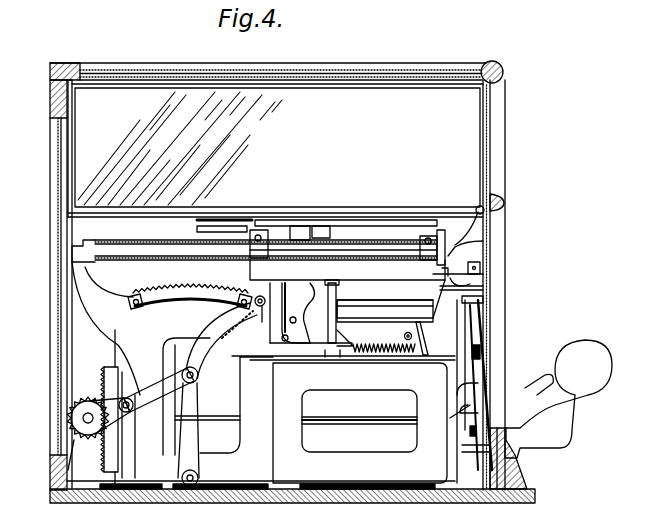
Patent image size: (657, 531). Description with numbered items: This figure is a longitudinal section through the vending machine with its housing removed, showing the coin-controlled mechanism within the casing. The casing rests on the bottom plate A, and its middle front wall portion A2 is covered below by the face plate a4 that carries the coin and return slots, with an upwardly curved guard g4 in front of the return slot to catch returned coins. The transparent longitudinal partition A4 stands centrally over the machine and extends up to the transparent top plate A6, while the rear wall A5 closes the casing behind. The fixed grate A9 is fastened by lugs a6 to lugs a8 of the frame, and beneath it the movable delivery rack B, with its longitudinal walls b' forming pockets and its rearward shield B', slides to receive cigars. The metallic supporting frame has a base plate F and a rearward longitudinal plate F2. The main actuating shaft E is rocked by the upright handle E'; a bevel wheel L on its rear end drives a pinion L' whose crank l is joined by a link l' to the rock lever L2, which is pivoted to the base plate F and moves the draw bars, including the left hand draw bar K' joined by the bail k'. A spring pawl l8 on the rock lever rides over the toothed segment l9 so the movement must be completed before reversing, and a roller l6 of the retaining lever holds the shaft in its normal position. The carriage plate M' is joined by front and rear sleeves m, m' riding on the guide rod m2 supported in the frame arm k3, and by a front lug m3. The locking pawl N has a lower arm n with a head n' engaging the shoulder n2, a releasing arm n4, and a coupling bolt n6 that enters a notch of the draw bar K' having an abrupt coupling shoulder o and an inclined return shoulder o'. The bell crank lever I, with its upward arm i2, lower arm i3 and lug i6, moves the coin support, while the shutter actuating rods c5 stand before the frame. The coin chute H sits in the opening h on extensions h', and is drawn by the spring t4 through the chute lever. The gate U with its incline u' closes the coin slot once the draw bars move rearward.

The bottom plate A is at (240, 496).
The middle portion of the front wall A2 is at (493, 160).
The longitudinal partition A4 is at (270, 220).
The rear wall A5 is at (56, 177).
The top plate A6 is at (157, 70).
The fixed grate A9 is at (213, 218).
The movable delivery rack B is at (254, 219).
The shield B' is at (201, 236).
The longitudinal walls of the rack b' is at (426, 215).
The front sleeve m is at (449, 220).
The rear sleeve m' is at (261, 216).
The guide rod m2 is at (345, 240).
The front lug m3 is at (392, 339).
The face plate a4 is at (483, 288).
The lugs a6 is at (296, 226).
The lugs of the frame a8 is at (312, 234).
The gate U is at (465, 234).
The left hand draw bar K' is at (499, 257).
The incline u' is at (493, 263).
The inclined return shoulder o' is at (428, 271).
The abrupt coupling shoulder o is at (458, 291).
The arm of the supporting frame k3 is at (62, 268).
The bail k' is at (240, 286).
The toothed segment l9 is at (166, 290).
The spring pawl l8 is at (262, 310).
The projection or roller l6 is at (107, 334).
The link l' is at (159, 389).
The crank l is at (100, 418).
The bevel wheel L is at (99, 409).
The pinion L' is at (50, 424).
The rock lever L2 is at (205, 352).
The locking pawl N is at (306, 352).
The left hand releasing arm n4 is at (288, 305).
The left hand coupling bolt n6 is at (337, 307).
The lower arm of the pawl n is at (331, 366).
The shoulder n2 is at (330, 350).
The head n' is at (343, 372).
The spring t4 is at (370, 354).
The lower arm of the bell crank lever i3 is at (425, 338).
The plate of the carriage M' is at (347, 291).
The base plate F is at (343, 419).
The window F'' is at (359, 421).
The rearward continuation of the vertical plate F2 is at (245, 396).
The main actuating shaft E is at (359, 429).
The actuating handle E' is at (558, 399).
The guard g4 is at (533, 392).
The coin chute H is at (487, 350).
The transverse opening h is at (450, 391).
The extensions h' is at (496, 356).
The bell crank lever I is at (450, 400).
The upwardly extending arm i2 is at (115, 490).
The lug i6 is at (470, 413).
The shutter actuating rods c5 is at (470, 432).